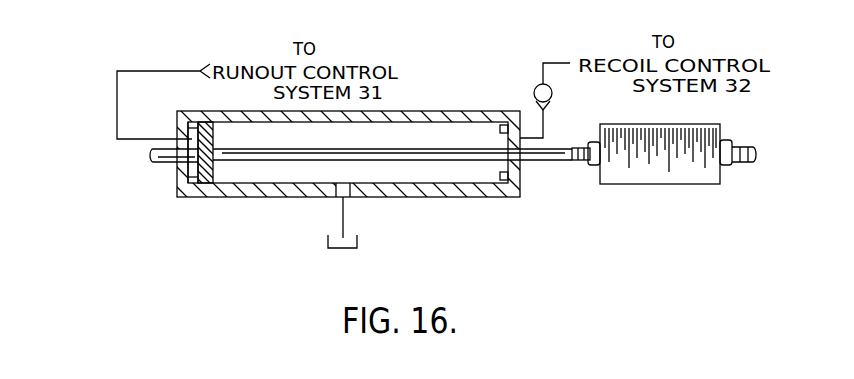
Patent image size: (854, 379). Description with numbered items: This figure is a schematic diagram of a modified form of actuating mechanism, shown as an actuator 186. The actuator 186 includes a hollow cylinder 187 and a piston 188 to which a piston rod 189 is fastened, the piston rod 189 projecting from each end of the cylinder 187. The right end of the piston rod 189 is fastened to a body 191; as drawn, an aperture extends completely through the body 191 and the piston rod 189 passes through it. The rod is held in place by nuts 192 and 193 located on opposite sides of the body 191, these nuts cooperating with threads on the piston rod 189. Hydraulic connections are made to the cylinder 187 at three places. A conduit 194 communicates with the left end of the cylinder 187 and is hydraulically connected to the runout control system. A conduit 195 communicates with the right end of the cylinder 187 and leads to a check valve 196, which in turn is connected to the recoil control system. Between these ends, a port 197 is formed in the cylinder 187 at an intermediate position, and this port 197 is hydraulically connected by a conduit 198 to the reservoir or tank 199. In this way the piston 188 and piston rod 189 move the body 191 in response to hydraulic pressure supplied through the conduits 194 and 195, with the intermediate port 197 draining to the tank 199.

The actuator 186 is at (150, 238).
The hollow cylinder 187 is at (425, 197).
The piston 188 is at (215, 136).
The piston rod 189 is at (572, 161).
The body 191 is at (675, 184).
The nut 192 is at (591, 166).
The nut 193 is at (727, 170).
The conduit 194 is at (117, 85).
The conduit 195 is at (543, 127).
The check valve 196 is at (533, 96).
The port 197 is at (349, 198).
The conduit 198 is at (338, 213).
The reservoir or tank 199 is at (325, 246).